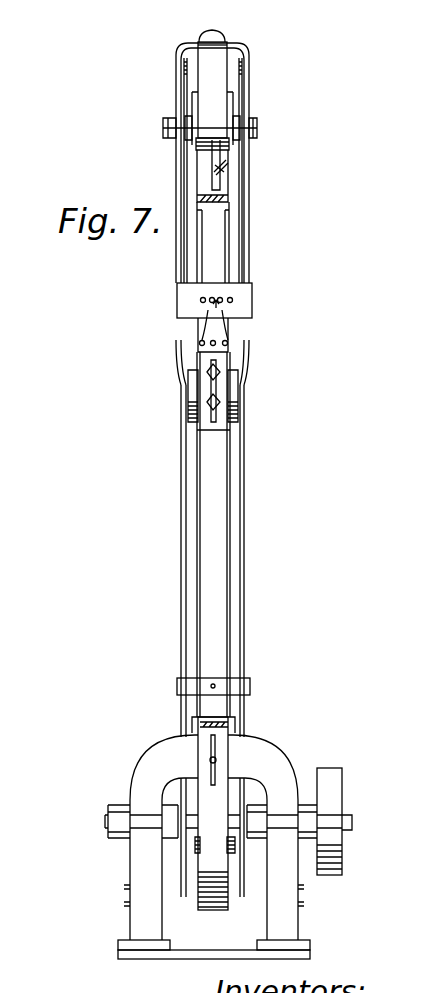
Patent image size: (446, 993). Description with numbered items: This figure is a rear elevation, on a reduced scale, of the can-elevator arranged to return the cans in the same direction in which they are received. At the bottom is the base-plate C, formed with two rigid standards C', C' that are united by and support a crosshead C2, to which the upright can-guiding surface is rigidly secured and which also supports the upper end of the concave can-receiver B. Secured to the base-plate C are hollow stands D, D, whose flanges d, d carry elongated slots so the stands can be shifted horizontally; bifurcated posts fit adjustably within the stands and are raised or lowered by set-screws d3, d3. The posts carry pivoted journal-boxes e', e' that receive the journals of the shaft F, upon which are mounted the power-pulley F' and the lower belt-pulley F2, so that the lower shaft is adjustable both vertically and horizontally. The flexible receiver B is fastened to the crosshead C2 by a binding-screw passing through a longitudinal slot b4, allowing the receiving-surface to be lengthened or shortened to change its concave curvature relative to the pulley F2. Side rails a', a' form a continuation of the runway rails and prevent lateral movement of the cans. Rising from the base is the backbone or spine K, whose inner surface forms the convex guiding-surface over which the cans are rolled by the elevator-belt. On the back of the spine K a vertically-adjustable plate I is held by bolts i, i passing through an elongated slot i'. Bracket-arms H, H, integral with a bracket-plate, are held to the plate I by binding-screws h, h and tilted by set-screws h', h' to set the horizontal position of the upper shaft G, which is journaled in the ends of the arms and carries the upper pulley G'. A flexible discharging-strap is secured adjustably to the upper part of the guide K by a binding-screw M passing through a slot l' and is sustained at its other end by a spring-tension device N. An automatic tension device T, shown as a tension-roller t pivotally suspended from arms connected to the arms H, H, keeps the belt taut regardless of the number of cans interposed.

The spring-tension device N is at (212, 27).
The upper pulley G' is at (184, 96).
The upper shaft G is at (211, 136).
The binding-screw M is at (226, 160).
The slot l' is at (186, 171).
The bracket-arms H is at (176, 252).
The vertically-adjustable plate I is at (215, 267).
The side rails a' is at (210, 580).
The binding-screws h is at (214, 317).
The set-screws h' is at (215, 299).
The automatic tension device T is at (216, 351).
The bolts i is at (212, 391).
The elongated slot i' is at (202, 391).
The tension-roller t is at (184, 424).
The backbone or spine K is at (213, 663).
The base-plate C is at (214, 847).
The rigid standards C' is at (212, 852).
The crosshead C2 is at (176, 747).
The longitudinal slot b4 is at (221, 751).
The concave can-receiver B is at (213, 813).
The shaft F is at (131, 821).
The power-pulley F' is at (344, 821).
The lower belt-pulley F2 is at (238, 852).
The journal-boxes e' is at (216, 815).
The flanges d is at (247, 942).
The set-screws d3 is at (124, 902).
The hollow stands D is at (126, 933).